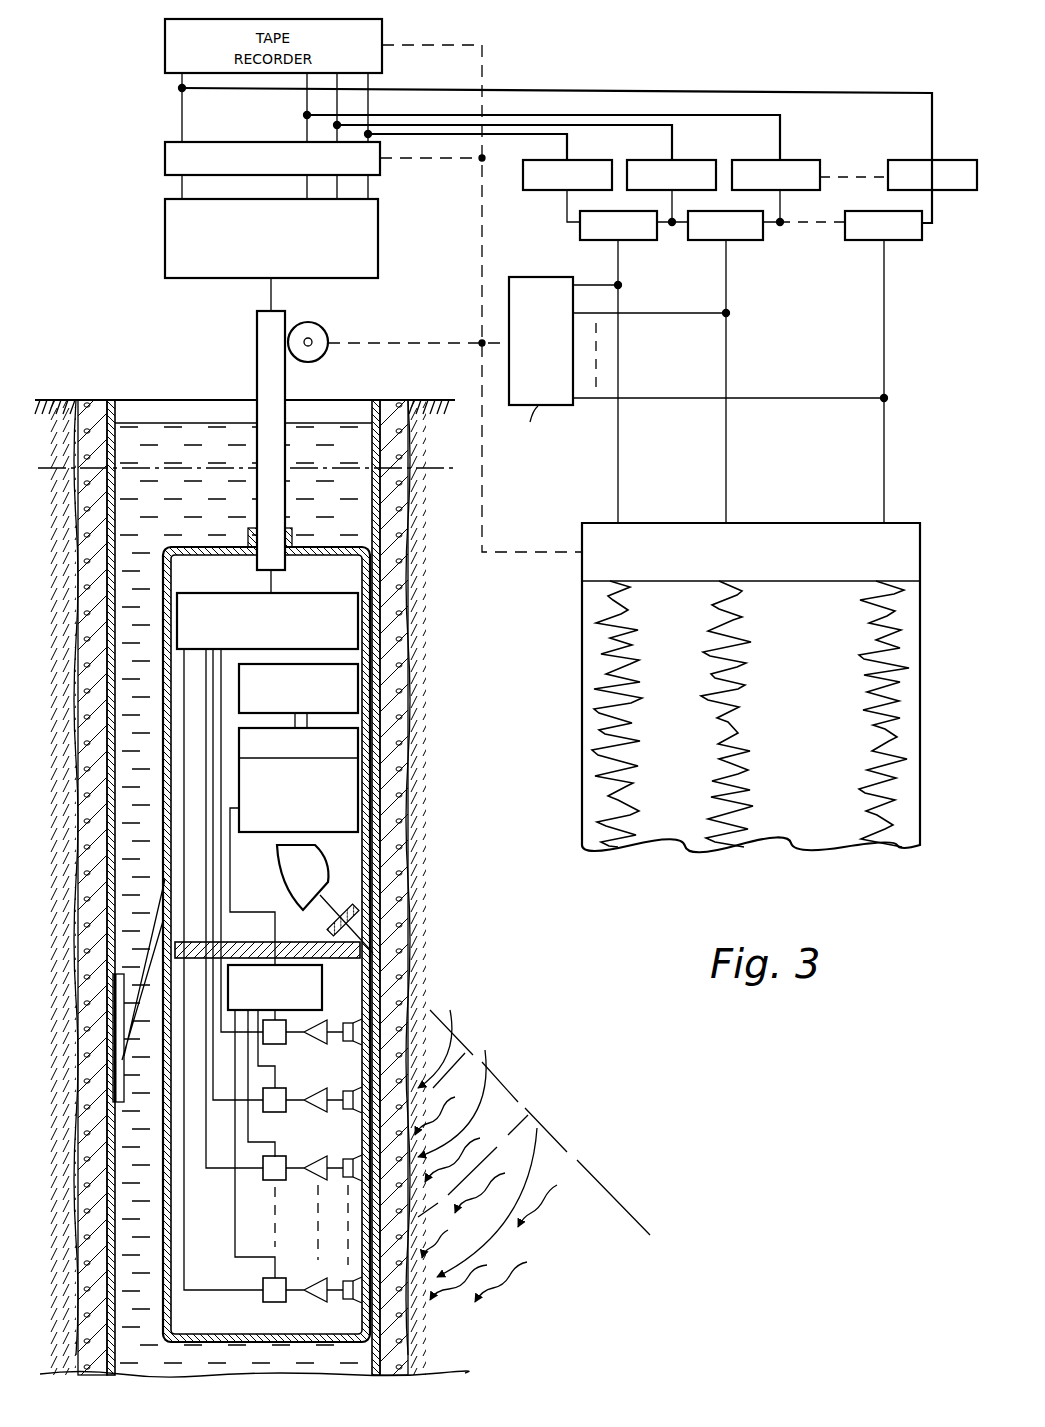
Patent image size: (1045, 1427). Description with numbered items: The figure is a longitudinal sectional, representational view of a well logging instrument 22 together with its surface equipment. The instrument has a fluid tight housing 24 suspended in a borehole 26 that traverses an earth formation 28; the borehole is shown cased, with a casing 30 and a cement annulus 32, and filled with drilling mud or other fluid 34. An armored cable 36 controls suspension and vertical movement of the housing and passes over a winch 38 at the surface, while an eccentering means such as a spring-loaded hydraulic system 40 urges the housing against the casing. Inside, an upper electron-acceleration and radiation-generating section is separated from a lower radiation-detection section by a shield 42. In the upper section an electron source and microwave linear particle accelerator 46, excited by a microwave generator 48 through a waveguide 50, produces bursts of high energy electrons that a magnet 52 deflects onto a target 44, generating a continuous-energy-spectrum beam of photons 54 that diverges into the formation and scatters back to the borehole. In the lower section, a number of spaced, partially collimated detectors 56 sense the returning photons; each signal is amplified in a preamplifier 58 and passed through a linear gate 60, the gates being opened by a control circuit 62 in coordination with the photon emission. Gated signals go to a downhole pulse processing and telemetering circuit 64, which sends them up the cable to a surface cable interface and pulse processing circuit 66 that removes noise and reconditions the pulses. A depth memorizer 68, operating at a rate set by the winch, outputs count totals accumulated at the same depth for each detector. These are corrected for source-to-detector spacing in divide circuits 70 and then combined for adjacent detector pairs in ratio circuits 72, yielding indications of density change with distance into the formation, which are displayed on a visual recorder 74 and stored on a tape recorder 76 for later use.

The well logging instrument 22 is at (157, 523).
The fluid tight housing 24 is at (163, 668).
The borehole 26 is at (54, 756).
The earth formation 28 is at (467, 639).
The casing 30 is at (122, 400).
The cement annulus 32 is at (75, 548).
The fluid 34 is at (187, 445).
The armored cable 36 is at (257, 333).
The winch 38 is at (325, 328).
The spring-loaded hydraulic system 40 is at (118, 1056).
The shield 42 is at (297, 934).
The target 44 is at (342, 906).
The electron source and microwave linear particle accelerator 46 is at (350, 781).
The microwave generator 48 is at (352, 686).
The waveguide 50 is at (307, 719).
The magnet 52 is at (277, 862).
The beam of photons 54 is at (505, 1090).
The detectors 56 is at (346, 1023).
The preamplifier 58 is at (318, 1046).
The linear gate 60 is at (276, 1044).
The control circuit 62 is at (322, 982).
The downhole pulse processing and telemetering circuit 64 is at (206, 593).
The cable interface and pulse processing circuit 66 is at (165, 237).
The depth memorizer 68 is at (165, 160).
The divide circuits 70 is at (648, 160).
The ratio circuits 72 is at (697, 240).
The visual recorder 74 is at (582, 572).
The tape recorder 76 is at (535, 277).